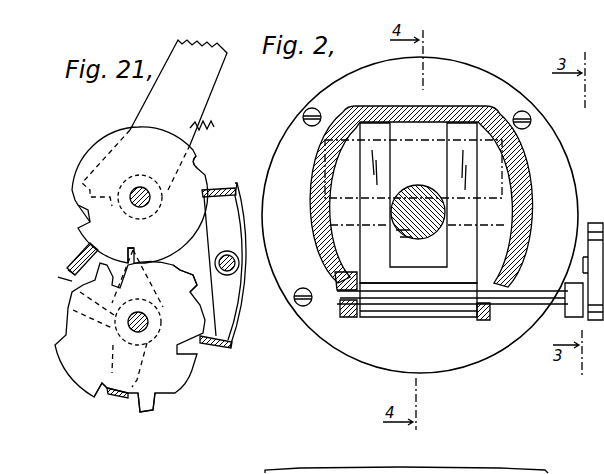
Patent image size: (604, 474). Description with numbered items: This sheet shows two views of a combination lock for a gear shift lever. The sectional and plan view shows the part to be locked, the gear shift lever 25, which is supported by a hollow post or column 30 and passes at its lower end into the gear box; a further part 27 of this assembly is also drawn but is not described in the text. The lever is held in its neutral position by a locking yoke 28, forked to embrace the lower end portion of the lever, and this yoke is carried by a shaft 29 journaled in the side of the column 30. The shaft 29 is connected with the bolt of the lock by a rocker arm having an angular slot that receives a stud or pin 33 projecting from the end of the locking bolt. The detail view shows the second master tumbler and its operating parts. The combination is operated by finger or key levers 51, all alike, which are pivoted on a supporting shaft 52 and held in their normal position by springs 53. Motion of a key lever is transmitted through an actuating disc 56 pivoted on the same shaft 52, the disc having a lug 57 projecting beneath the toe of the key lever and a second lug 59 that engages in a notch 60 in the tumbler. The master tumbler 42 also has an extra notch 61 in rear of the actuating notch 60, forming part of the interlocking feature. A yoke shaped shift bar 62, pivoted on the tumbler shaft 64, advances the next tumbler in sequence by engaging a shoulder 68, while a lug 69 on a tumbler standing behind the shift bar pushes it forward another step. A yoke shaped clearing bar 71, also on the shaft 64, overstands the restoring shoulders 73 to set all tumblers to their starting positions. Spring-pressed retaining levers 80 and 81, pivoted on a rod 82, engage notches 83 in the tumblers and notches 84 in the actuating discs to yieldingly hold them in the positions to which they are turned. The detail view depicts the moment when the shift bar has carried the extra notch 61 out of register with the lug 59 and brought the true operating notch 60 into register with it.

In FIG. 2, the gear shift lever 25 is at (427, 166).
In FIG. 2, the carrier block 27 is at (338, 236).
In FIG. 2, the locking yoke 28 is at (370, 258).
In FIG. 2, the shaft 29 is at (513, 302).
In FIG. 2, the hollow post or column 30 is at (312, 192).
In FIG. 2, the stud or pin 33 is at (583, 264).
In FIG. 21, the master tumbler 42 is at (185, 276).
In FIG. 21, the finger or key lever 51 is at (208, 88).
In FIG. 21, the supporting shaft 52 is at (143, 186).
In FIG. 21, the spring 53 is at (210, 116).
In FIG. 21, the actuating disc 56 is at (91, 148).
In FIG. 21, the lug 57 is at (92, 221).
In FIG. 21, the lug 59 is at (133, 250).
In FIG. 21, the notch 60 is at (72, 273).
In FIG. 21, the notch 61 is at (120, 258).
In FIG. 21, the shift bar 62 is at (123, 402).
In FIG. 21, the tumbler shaft 64 is at (148, 320).
In FIG. 21, the shoulder 68 is at (97, 397).
In FIG. 21, the lug 69 is at (153, 404).
In FIG. 21, the clearing bar 71 is at (70, 258).
In FIG. 21, the restoring shoulder 73 is at (63, 338).
In FIG. 21, the retaining lever 80 is at (238, 305).
In FIG. 21, the retaining lever 81 is at (219, 259).
In FIG. 21, the rod 82 is at (238, 269).
In FIG. 21, the notch 83 is at (205, 323).
In FIG. 21, the notch 84 is at (205, 167).